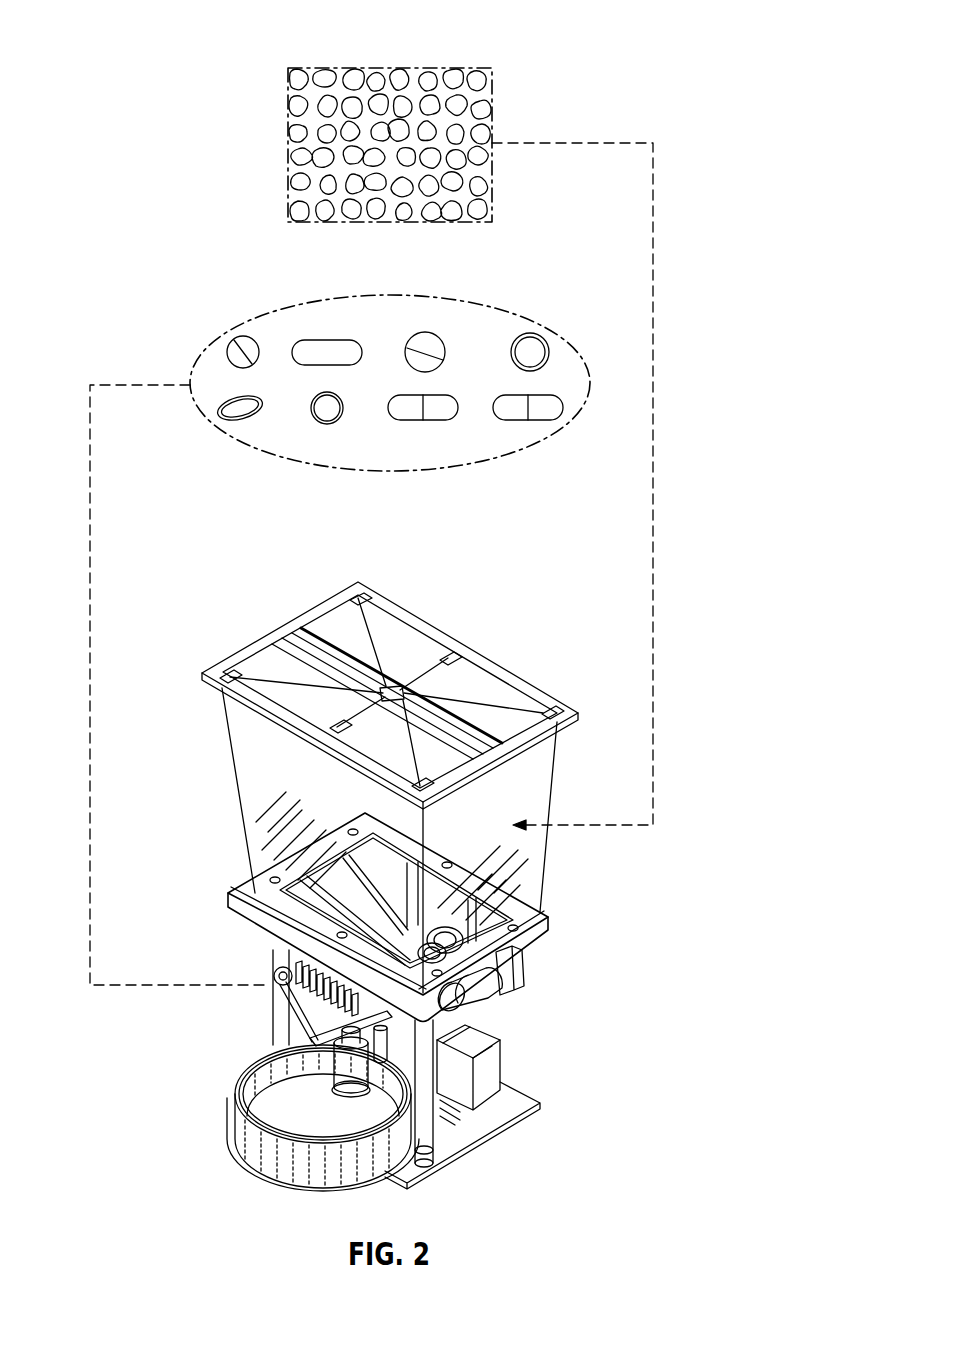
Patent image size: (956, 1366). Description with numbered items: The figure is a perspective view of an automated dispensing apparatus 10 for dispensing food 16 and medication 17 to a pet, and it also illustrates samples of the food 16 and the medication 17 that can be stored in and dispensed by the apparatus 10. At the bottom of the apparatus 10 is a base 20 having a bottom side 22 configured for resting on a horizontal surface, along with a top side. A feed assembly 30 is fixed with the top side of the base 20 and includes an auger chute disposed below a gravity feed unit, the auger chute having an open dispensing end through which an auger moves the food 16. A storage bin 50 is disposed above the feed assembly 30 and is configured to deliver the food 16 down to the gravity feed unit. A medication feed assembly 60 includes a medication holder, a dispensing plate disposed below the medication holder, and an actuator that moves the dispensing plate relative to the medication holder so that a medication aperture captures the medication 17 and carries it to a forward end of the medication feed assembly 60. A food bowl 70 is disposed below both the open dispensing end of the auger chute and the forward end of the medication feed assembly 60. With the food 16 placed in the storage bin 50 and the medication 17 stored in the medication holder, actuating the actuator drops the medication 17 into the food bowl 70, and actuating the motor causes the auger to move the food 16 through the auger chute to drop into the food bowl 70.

The automated dispensing apparatus 10 is at (553, 624).
The food 16 is at (388, 68).
The medication 17 is at (268, 318).
The base 20 is at (537, 1103).
The bottom side 22 is at (500, 1090).
The feed assembly 30 is at (541, 969).
The storage bin 50 is at (235, 793).
The medication feed assembly 60 is at (315, 1001).
The food bowl 70 is at (257, 1128).